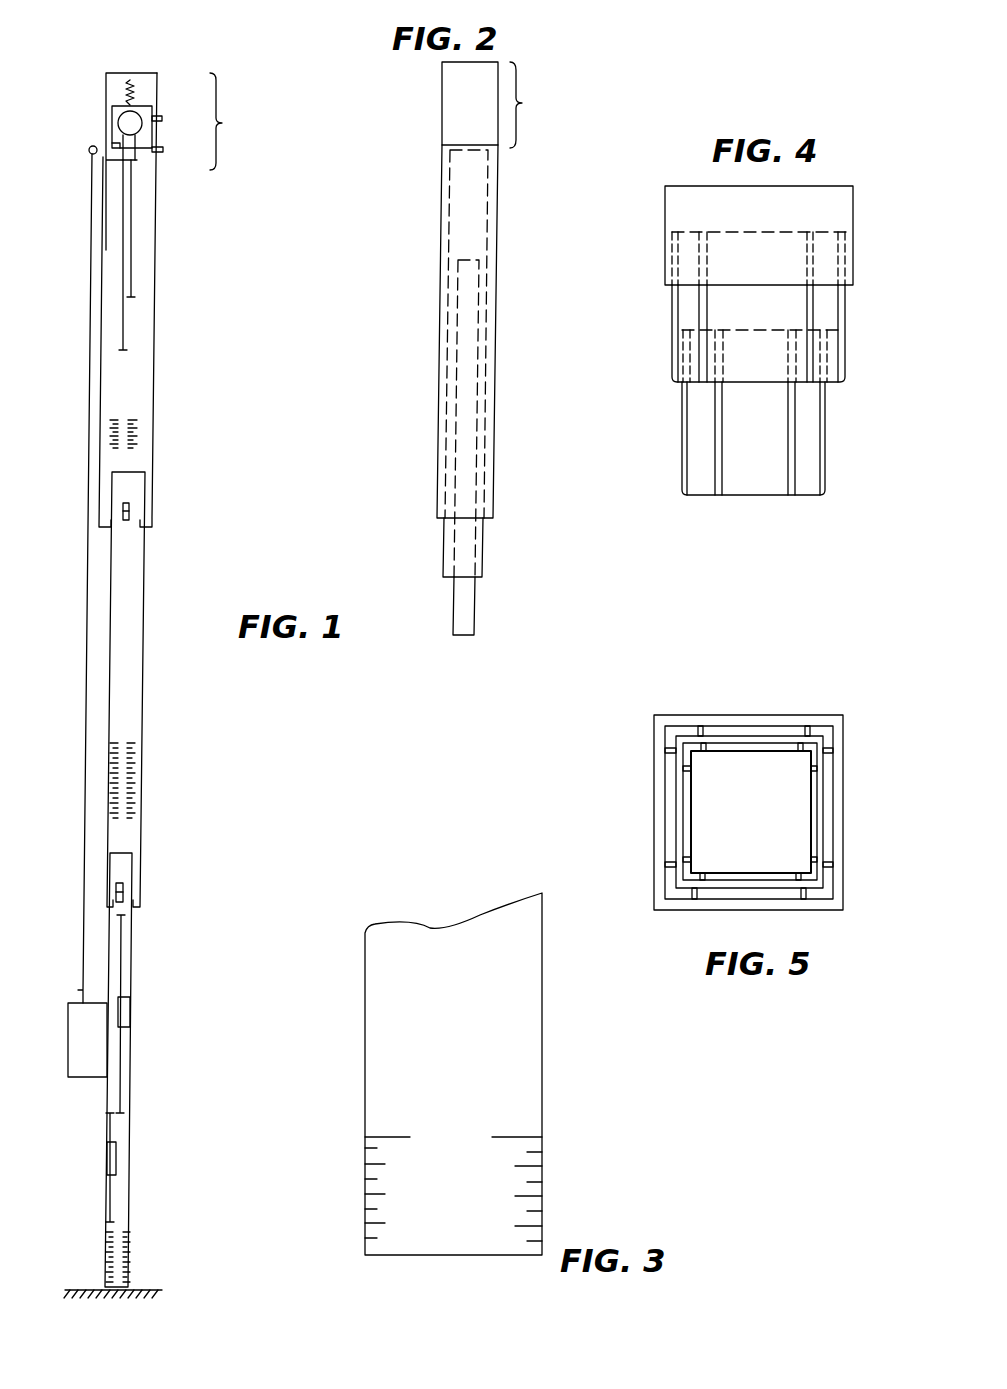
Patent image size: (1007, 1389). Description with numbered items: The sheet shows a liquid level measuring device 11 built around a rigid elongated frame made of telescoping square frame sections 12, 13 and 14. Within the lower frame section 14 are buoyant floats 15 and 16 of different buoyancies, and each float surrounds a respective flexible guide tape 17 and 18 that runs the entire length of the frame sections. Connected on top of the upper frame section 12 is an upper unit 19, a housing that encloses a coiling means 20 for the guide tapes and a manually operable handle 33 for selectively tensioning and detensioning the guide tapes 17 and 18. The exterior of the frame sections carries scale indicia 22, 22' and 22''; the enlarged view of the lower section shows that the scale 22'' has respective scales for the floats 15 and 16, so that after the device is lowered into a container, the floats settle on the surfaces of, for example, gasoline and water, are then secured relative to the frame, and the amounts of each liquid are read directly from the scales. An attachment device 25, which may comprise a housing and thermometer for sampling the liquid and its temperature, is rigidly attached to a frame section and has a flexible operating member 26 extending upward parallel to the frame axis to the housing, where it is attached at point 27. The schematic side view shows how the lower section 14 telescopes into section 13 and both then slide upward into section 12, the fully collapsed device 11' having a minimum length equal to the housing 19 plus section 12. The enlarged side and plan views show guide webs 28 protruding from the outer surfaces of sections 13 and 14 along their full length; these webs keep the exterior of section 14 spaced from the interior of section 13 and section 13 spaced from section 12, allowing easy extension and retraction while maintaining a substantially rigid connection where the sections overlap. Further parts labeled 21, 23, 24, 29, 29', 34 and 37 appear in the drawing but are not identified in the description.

In FIG. 1, the liquid level measuring device 11 is at (134, 664).
In FIG. 2, the collapsed liquid level measuring device 11' is at (474, 348).
In FIG. 1, the upper frame section 12 is at (157, 362).
In FIG. 2, the upper frame section 12 is at (495, 393).
In FIG. 4, the upper frame section 12 is at (853, 268).
In FIG. 5, the upper frame section 12 is at (843, 860).
In FIG. 1, the intermediate frame section 13 is at (143, 688).
In FIG. 2, the intermediate frame section 13 is at (483, 548).
In FIG. 4, the intermediate frame section 13 is at (836, 383).
In FIG. 5, the intermediate frame section 13 is at (823, 816).
In FIG. 1, the lower frame section 14 is at (131, 1195).
In FIG. 2, the lower frame section 14 is at (476, 600).
In FIG. 4, the lower frame section 14 is at (700, 495).
In FIG. 5, the lower frame section 14 is at (811, 797).
In FIG. 1, the buoyant float 15 is at (107, 1152).
In FIG. 1, the buoyant float 16 is at (129, 1012).
In FIG. 1, the flexible guide tape 17 is at (123, 292).
In FIG. 1, the flexible guide tape 18 is at (133, 212).
In FIG. 1, the upper unit 19 is at (233, 121).
In FIG. 2, the upper unit 19 is at (500, 105).
In FIG. 1, the coiling means 20 is at (121, 126).
In FIG. 1, the head housing 21 is at (157, 90).
In FIG. 1, the exterior scale indicia 22 is at (150, 419).
In FIG. 1, the exterior scale indicia 22' is at (156, 780).
In FIG. 1, the exterior scale indicia 22'' is at (155, 1255).
In FIG. 3, the exterior scale indicia 22'' is at (570, 1179).
In FIG. 3, the index mark 23 is at (388, 1137).
In FIG. 3, the index mark 24 is at (507, 1137).
In FIG. 1, the attachment device 25 is at (68, 1035).
In FIG. 1, the flexible operating member 26 is at (90, 385).
In FIG. 1, the attachment point 27 is at (89, 153).
In FIG. 4, the guide webs 28 is at (672, 316).
In FIG. 5, the guide webs 28 is at (705, 742).
In FIG. 1, the latch 29 is at (157, 516).
In FIG. 1, the latch 29' is at (159, 891).
In FIG. 1, the manually operable handle 33 is at (162, 118).
In FIG. 1, the spring 34 is at (130, 88).
In FIG. 1, the lug 37 is at (163, 151).